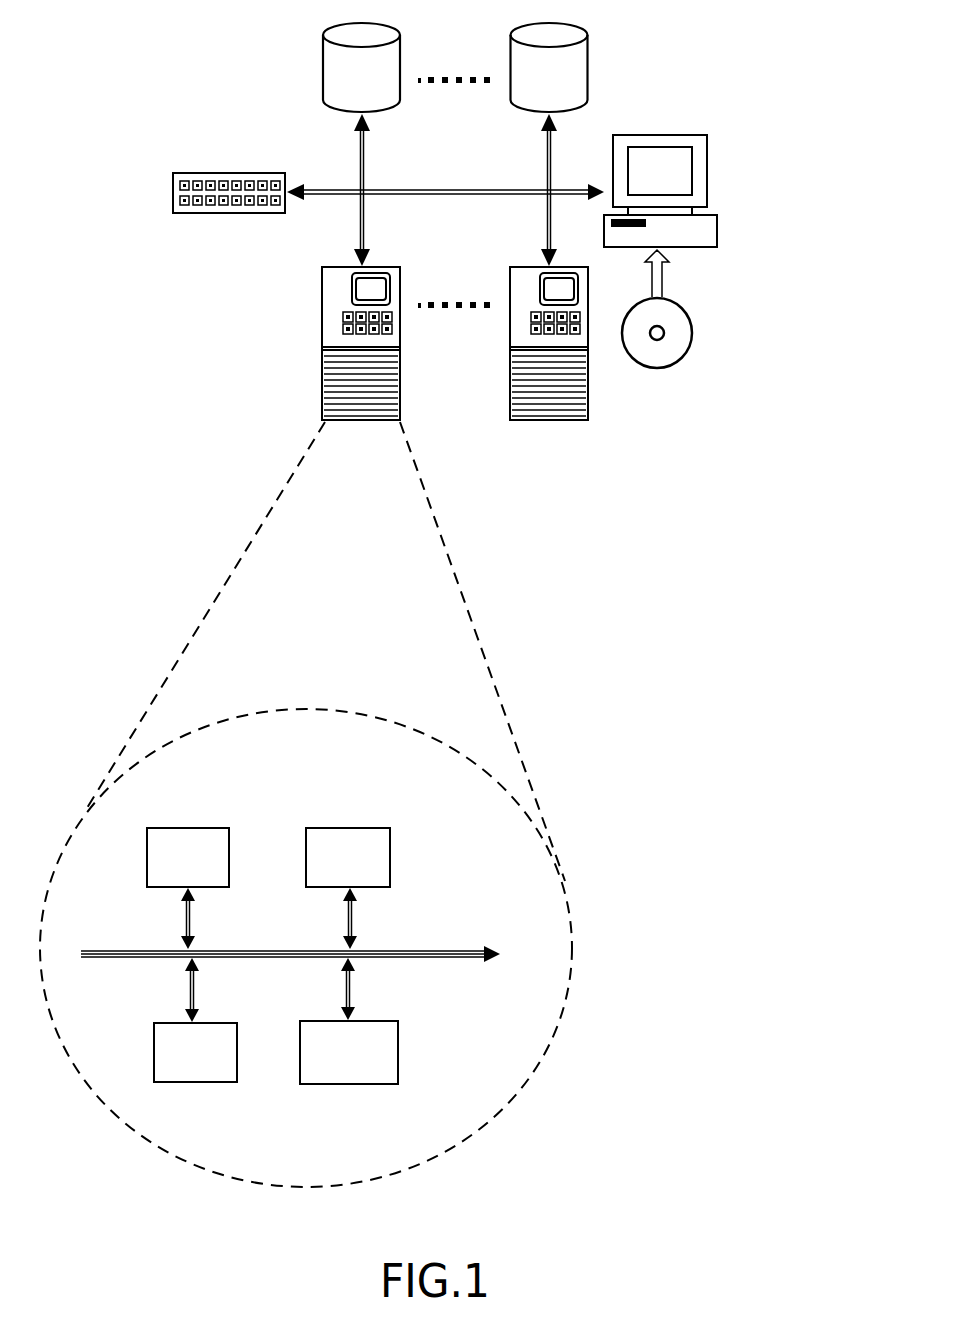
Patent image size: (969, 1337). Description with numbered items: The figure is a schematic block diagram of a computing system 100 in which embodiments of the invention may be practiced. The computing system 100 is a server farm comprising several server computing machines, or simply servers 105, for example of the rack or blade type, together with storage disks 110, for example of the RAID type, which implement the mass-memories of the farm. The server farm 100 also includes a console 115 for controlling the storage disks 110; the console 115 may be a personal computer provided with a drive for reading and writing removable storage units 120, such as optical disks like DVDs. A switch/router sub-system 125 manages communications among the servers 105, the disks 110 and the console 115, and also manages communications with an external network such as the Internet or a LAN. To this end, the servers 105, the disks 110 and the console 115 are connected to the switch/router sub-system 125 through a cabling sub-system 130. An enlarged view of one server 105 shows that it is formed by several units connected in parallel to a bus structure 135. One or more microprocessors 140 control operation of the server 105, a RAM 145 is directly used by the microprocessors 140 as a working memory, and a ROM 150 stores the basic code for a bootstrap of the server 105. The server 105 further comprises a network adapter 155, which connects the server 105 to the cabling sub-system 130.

The computing system 100 is at (458, 300).
The server 105 is at (322, 378).
The storage disk 110 is at (320, 90).
The console 115 is at (632, 135).
The removable storage unit 120 is at (640, 366).
The switch/router sub-system 125 is at (203, 214).
The cabling sub-system 130 is at (436, 195).
The bus structure 135 is at (461, 960).
The microprocessor 140 is at (203, 828).
The RAM 145 is at (345, 828).
The ROM 150 is at (197, 1082).
The network adapter 155 is at (337, 1084).